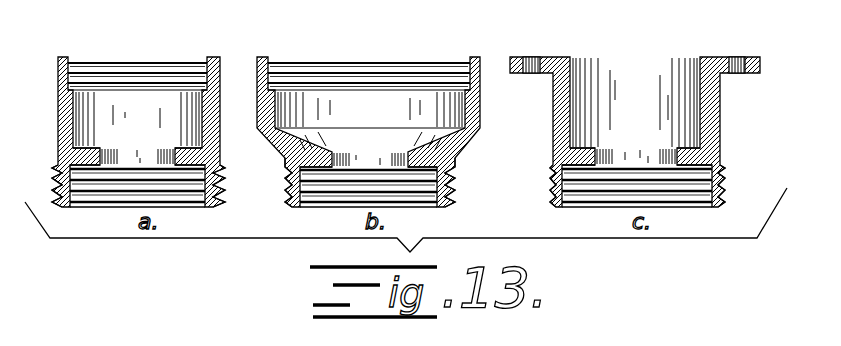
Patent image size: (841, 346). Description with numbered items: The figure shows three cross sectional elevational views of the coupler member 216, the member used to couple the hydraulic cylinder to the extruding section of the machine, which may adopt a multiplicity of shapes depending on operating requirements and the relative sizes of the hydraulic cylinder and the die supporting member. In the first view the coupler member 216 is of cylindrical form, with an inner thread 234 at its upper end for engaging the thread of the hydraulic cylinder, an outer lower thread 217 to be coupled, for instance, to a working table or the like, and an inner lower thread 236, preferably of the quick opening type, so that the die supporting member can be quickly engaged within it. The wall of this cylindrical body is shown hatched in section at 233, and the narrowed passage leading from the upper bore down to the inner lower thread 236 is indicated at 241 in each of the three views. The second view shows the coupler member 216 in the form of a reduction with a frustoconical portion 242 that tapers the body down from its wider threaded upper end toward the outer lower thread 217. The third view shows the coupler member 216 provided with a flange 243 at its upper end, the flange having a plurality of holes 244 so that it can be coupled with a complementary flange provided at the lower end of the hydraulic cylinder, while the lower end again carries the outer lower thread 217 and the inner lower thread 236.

The coupler member 216 is at (138, 100).
The outer lower thread 217 is at (55, 190).
The cap body wall 233 is at (83, 153).
The inner thread 234 is at (97, 72).
The inner lower thread 236 is at (183, 197).
The neck passage 241 is at (138, 157).
The frustoconical portion 242 is at (268, 146).
The flange 243 is at (532, 57).
The holes 244 is at (737, 57).